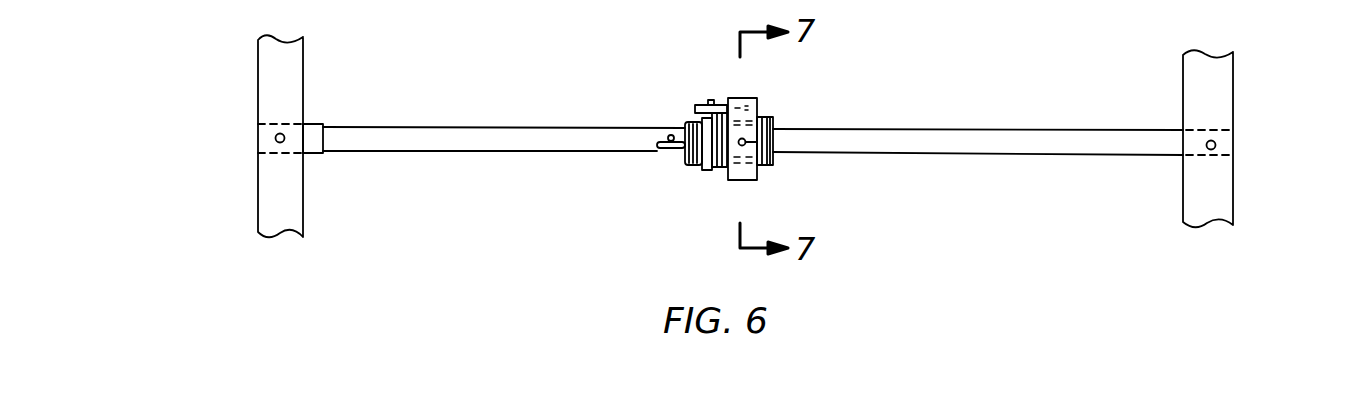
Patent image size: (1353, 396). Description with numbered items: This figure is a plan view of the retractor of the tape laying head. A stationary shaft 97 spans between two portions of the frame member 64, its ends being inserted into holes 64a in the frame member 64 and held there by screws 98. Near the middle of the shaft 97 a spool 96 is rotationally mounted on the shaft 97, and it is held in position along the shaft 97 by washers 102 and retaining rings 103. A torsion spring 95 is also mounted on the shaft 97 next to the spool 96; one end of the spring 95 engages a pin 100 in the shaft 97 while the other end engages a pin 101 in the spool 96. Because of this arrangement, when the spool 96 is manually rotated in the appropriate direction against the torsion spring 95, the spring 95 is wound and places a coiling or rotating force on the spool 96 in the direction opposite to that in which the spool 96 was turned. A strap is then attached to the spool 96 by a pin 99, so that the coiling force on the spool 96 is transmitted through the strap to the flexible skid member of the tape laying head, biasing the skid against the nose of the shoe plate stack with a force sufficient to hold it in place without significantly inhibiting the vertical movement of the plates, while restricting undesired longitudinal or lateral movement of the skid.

The frame member 64 is at (303, 72).
The holes 64a is at (258, 128).
The screws 98 is at (276, 140).
The stationary shaft 97 is at (425, 127).
The pin 100 is at (671, 135).
The torsion spring 95 is at (700, 166).
The pin 101 is at (699, 105).
The spool 96 is at (760, 117).
The pin 99 is at (773, 148).
The washers 102 is at (763, 117).
The retaining rings 103 is at (774, 125).